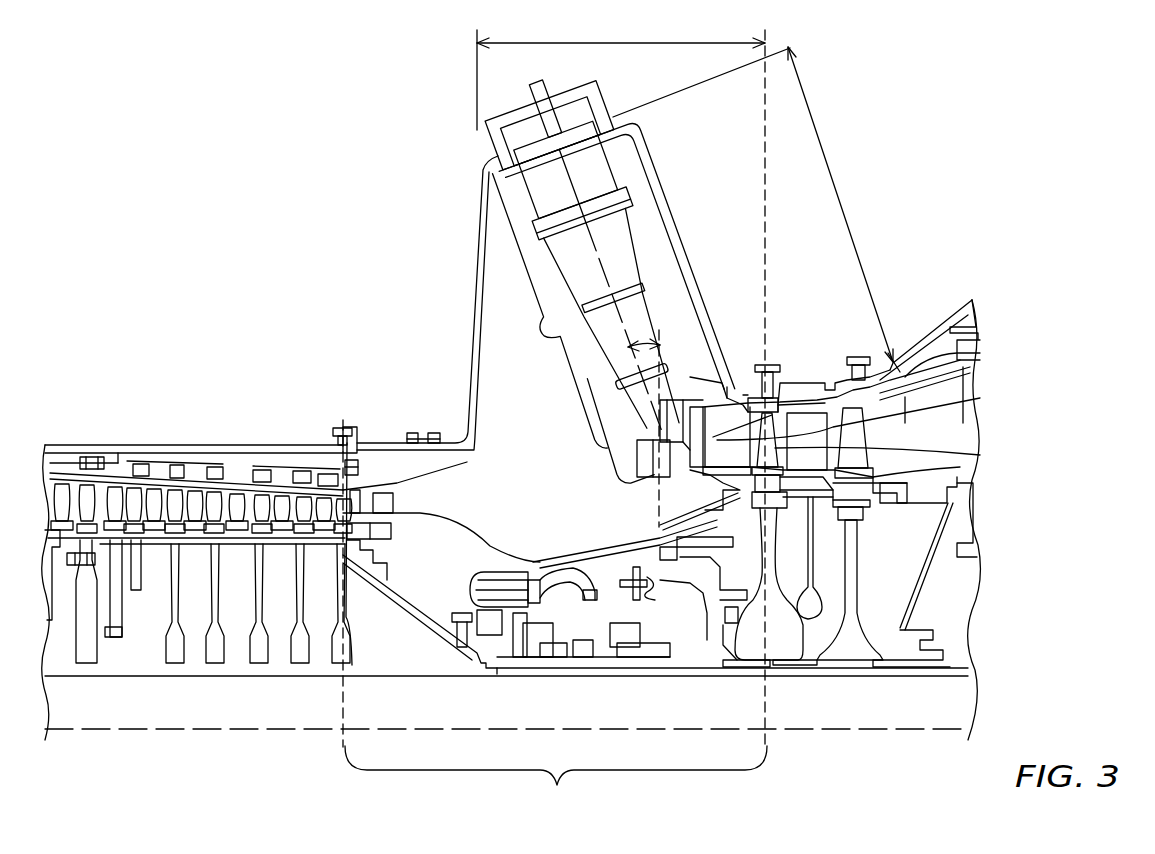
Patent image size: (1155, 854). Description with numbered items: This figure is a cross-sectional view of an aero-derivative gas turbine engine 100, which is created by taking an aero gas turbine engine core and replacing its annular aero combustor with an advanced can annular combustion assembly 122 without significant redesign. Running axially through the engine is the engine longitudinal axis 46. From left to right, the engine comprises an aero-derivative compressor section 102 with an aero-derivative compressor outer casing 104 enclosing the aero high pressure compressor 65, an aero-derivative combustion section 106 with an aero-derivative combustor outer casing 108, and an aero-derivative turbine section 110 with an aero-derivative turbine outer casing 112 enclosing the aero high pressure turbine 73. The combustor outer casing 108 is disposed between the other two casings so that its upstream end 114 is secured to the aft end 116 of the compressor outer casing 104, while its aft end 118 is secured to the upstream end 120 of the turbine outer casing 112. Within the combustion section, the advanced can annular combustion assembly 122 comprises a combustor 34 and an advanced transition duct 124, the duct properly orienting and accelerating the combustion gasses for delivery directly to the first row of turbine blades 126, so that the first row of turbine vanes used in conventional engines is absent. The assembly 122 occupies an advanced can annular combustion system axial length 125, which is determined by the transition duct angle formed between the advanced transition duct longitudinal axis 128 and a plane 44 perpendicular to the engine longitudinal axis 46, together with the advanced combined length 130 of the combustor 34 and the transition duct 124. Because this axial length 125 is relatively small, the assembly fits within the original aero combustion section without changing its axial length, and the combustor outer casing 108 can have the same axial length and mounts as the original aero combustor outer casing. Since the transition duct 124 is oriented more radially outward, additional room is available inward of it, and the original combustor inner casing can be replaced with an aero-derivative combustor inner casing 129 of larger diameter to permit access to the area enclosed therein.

The aero-derivative gas turbine engine 100 is at (279, 190).
The aero-derivative compressor section 102 is at (198, 503).
The aero-derivative compressor outer casing 104 is at (140, 445).
The aero high pressure compressor 65 is at (196, 448).
The aft end of the aero-derivative compressor outer casing 116 is at (335, 445).
The upstream end of the aero-derivative combustor outer casing 114 is at (358, 443).
The aero-derivative combustion section 106 is at (557, 785).
The engine longitudinal axis 46 is at (508, 728).
The advanced can annular combustion assembly 122 is at (540, 330).
The aero-derivative combustor outer casing 108 is at (661, 178).
The combustor 34 is at (600, 182).
The advanced transition duct longitudinal axis 128 is at (603, 262).
The advanced transition duct 124 is at (648, 275).
The advanced can annular combustion system axial length 125 is at (610, 46).
The advanced combined length 130 is at (850, 210).
The plane perpendicular to the engine longitudinal axis 44 is at (657, 495).
The aft end of the aero-derivative combustor outer casing 118 is at (762, 365).
The aero-derivative turbine outer casing 112 is at (840, 358).
The upstream end of the aero-derivative turbine outer casing 120 is at (783, 372).
The aero-derivative turbine section 110 is at (940, 292).
The aero high pressure turbine 73 is at (980, 398).
The first row of turbine blades 126 is at (982, 455).
The aero-derivative combustor inner casing 129 is at (590, 552).